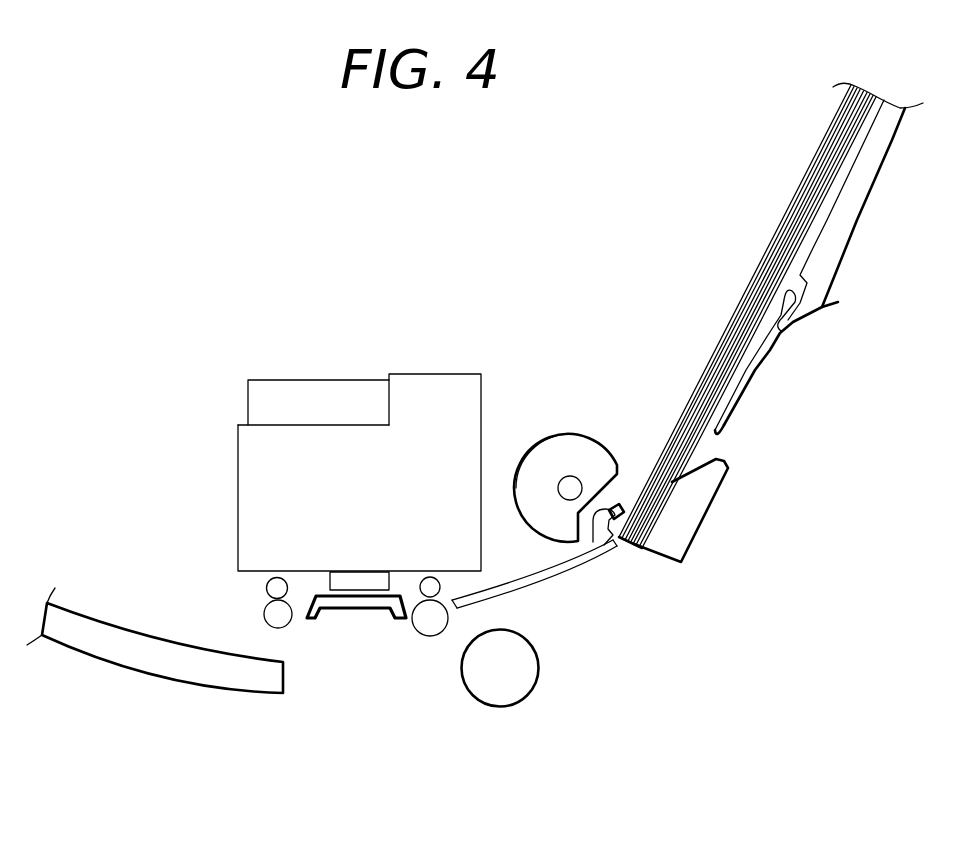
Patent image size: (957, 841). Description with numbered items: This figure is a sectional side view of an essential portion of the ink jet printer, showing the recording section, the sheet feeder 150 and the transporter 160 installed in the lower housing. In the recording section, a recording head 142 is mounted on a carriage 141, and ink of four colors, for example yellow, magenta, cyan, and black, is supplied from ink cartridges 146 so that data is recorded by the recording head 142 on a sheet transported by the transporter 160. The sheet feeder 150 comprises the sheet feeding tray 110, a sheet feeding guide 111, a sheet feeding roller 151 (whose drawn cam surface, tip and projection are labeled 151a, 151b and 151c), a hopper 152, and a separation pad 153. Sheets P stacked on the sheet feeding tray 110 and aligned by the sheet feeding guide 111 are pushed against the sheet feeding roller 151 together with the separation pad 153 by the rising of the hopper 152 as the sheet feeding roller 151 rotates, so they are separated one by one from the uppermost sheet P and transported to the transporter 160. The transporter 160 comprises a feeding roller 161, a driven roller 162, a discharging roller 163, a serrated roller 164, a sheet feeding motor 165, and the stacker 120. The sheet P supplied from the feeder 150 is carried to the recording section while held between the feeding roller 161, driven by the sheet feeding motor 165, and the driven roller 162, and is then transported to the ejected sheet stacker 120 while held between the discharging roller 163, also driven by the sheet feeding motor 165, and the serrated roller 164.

The sheet P is at (780, 233).
The sheet feeding tray 110 is at (843, 257).
The sheet feeding guide 111 is at (757, 372).
The stacker 120 is at (124, 660).
The carriage 141 is at (436, 383).
The recording head 142 is at (355, 578).
The ink cartridges 146 is at (297, 388).
The sheet feeder 150 is at (808, 503).
The sheet feeding roller 151 is at (541, 452).
The cam surface 151a is at (573, 432).
The cam tip portion 151b is at (580, 541).
The cam projection 151c is at (615, 490).
The hopper 152 is at (699, 511).
The separation pad 153 is at (603, 543).
The transporter 160 is at (524, 714).
The feeding roller 161 is at (417, 628).
The driven roller 162 is at (442, 589).
The discharging roller 163 is at (265, 620).
The serrated roller 164 is at (267, 588).
The sheet feeding motor 165 is at (539, 677).